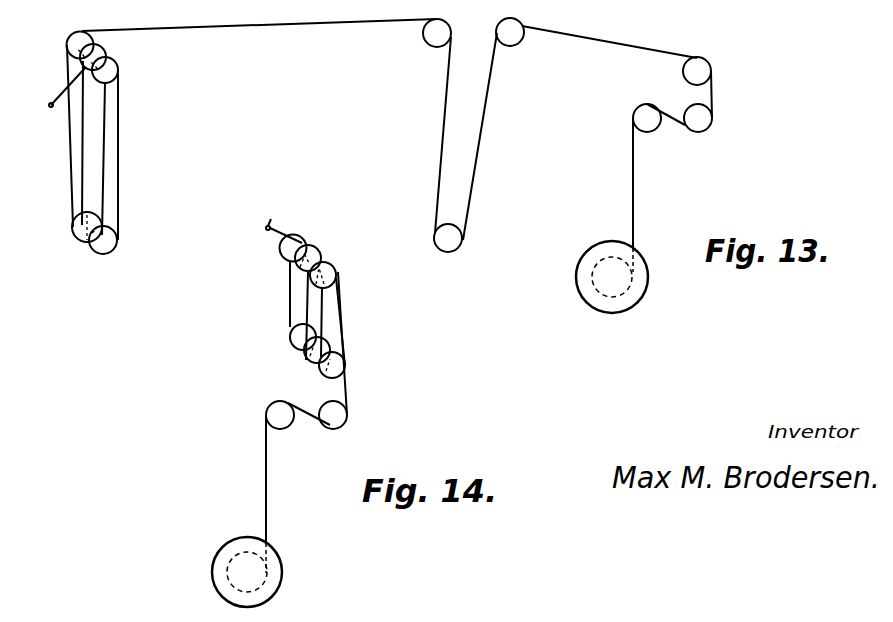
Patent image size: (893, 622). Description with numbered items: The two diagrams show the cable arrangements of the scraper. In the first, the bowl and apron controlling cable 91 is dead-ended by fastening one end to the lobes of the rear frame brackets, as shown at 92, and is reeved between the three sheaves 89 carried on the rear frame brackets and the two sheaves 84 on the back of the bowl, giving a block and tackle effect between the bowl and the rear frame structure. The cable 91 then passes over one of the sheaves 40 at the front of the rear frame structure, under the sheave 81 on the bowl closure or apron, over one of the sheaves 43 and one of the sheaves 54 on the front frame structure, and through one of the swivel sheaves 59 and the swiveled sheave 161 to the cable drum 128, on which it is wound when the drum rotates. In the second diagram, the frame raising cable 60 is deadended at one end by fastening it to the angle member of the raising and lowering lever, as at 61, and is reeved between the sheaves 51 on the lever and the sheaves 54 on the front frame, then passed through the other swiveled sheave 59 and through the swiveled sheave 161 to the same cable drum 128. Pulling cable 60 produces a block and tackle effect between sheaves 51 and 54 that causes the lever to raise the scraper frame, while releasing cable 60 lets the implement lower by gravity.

In FIG. 13, the sheaves 40 is at (433, 44).
In FIG. 13, the sheaves 43 is at (510, 42).
In FIG. 14, the sheaves 51 is at (338, 256).
In FIG. 13, the sheaves 54 is at (709, 69).
In FIG. 14, the sheaves 54 is at (320, 375).
In FIG. 13, the swiveled sheaves 59 is at (709, 118).
In FIG. 14, the swiveled sheaves 59 is at (332, 425).
In FIG. 14, the cable 60 is at (347, 392).
In FIG. 14, the dead end 61 is at (281, 221).
In FIG. 13, the sheave 81 is at (455, 244).
In FIG. 13, the sheaves 84 is at (80, 247).
In FIG. 13, the sheaves 89 is at (100, 40).
In FIG. 13, the cable 91 is at (242, 27).
In FIG. 13, the dead end 92 is at (50, 105).
In FIG. 13, the cable drum 128 is at (642, 258).
In FIG. 14, the cable drum 128 is at (277, 567).
In FIG. 13, the swiveled sheave 161 is at (647, 112).
In FIG. 14, the swiveled sheave 161 is at (272, 417).